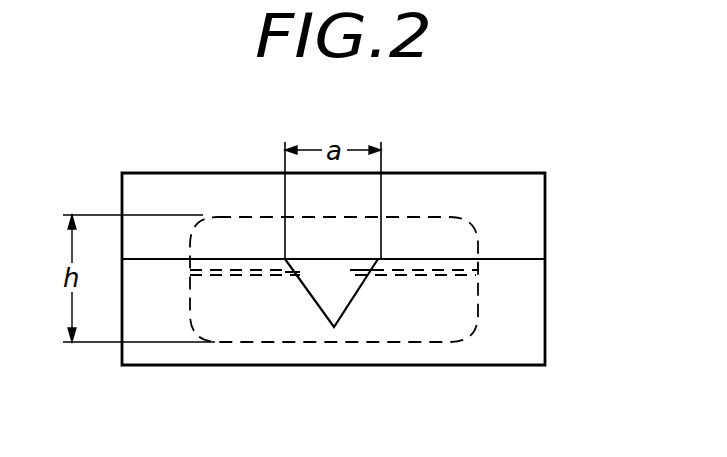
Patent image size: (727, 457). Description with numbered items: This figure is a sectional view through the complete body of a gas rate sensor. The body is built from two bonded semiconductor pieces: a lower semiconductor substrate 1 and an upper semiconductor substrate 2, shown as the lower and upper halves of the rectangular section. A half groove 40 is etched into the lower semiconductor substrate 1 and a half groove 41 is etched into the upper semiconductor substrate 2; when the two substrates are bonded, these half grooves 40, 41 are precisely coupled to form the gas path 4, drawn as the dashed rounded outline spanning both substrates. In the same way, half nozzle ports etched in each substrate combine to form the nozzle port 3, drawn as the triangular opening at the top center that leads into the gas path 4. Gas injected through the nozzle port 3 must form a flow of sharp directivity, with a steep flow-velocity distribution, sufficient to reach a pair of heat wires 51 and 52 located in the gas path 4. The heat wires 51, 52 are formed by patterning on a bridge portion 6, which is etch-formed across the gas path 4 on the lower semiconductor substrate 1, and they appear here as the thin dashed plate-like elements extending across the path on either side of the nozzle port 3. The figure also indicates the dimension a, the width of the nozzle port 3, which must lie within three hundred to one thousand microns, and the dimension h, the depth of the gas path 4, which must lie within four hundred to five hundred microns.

The lower semiconductor substrate 1 is at (545, 328).
The upper semiconductor substrate 2 is at (545, 211).
The nozzle port 3 is at (332, 295).
The gas path 4 is at (406, 309).
The half groove 40 is at (373, 312).
The half groove 41 is at (402, 237).
The heat wire 51 is at (228, 274).
The heat wire 52 is at (440, 277).
The bridge portion 6 is at (312, 263).